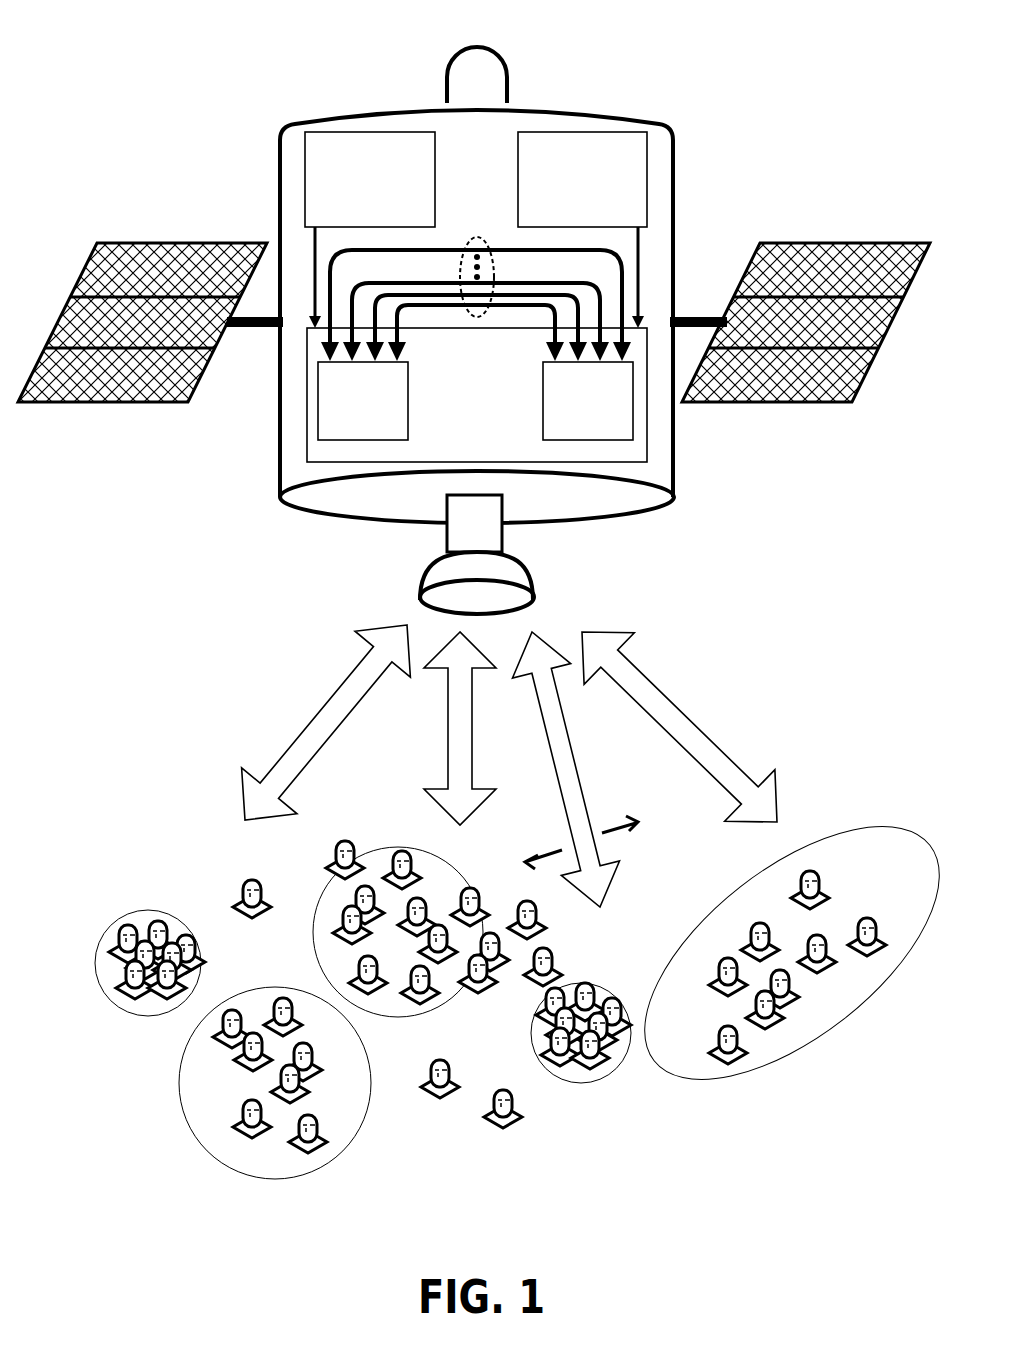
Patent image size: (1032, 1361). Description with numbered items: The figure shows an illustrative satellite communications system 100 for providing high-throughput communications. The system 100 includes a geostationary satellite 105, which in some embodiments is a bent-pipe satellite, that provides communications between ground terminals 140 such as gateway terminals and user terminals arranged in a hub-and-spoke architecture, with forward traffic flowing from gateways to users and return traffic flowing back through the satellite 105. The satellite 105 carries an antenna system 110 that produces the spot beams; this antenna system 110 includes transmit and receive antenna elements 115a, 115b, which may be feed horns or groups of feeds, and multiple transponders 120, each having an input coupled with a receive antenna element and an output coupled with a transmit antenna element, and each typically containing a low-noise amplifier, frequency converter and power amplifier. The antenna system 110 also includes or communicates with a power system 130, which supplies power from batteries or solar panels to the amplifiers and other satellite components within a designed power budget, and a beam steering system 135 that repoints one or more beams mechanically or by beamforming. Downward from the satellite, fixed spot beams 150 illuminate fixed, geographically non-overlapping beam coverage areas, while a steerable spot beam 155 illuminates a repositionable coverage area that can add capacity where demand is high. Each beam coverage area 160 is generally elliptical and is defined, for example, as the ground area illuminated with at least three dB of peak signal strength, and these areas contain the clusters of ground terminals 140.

The satellite communications system 100 is at (155, 48).
The satellite 105 is at (590, 106).
The antenna system 110 is at (495, 405).
The antenna element 115a is at (387, 412).
The antenna element 115b is at (612, 412).
The transponders 120 is at (494, 272).
The power system 130 is at (388, 190).
The beam steering system 135 is at (601, 190).
The ground terminals 140 is at (518, 1108).
The fixed spot beams 150 is at (344, 731).
The steerable spot beam 155 is at (593, 792).
The beam coverage area 160 is at (735, 1076).